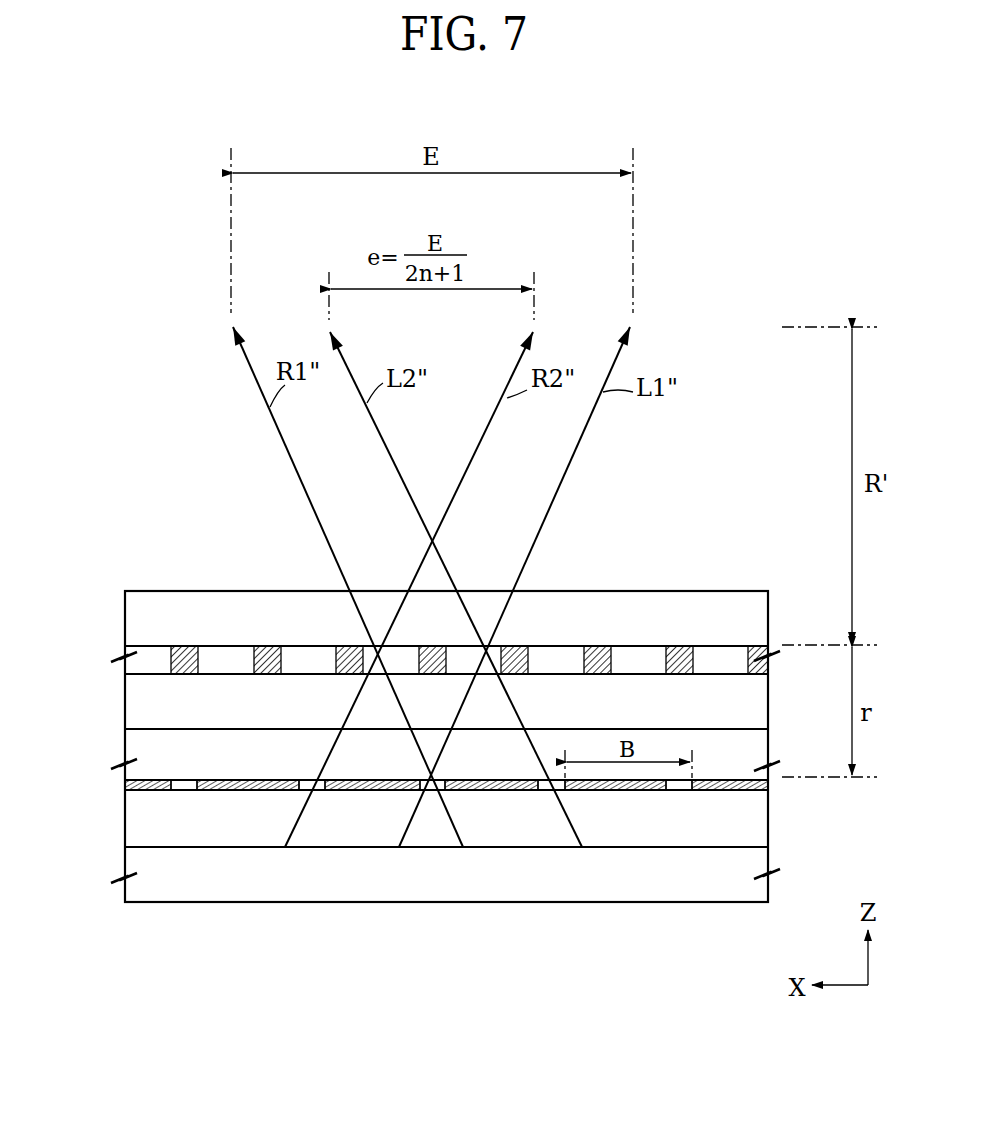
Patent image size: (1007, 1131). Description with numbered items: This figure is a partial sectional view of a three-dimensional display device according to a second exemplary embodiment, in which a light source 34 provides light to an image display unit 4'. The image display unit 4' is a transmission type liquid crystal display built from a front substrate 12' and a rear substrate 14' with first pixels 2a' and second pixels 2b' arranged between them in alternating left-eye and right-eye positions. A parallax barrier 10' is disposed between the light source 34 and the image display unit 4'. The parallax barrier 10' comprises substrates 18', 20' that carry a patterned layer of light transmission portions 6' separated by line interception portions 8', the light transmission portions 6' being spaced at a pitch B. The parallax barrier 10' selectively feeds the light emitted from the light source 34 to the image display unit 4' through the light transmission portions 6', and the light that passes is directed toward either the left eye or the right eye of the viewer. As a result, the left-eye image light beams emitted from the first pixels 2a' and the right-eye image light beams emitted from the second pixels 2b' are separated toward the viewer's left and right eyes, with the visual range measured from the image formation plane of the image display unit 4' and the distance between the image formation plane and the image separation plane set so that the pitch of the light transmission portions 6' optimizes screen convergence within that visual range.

The image display unit 4' is at (406, 660).
The front substrate 12' is at (446, 589).
The first pixels 2a' is at (469, 597).
The second pixels 2b' is at (451, 599).
The rear substrate 14' is at (397, 701).
The substrate of parallax barrier 20' is at (402, 754).
The line interception portions 8' is at (446, 884).
The light transmission portions 6' is at (431, 884).
The parallax barrier 10' is at (400, 841).
The substrate of parallax barrier 18' is at (409, 897).
The light source 34 is at (378, 882).